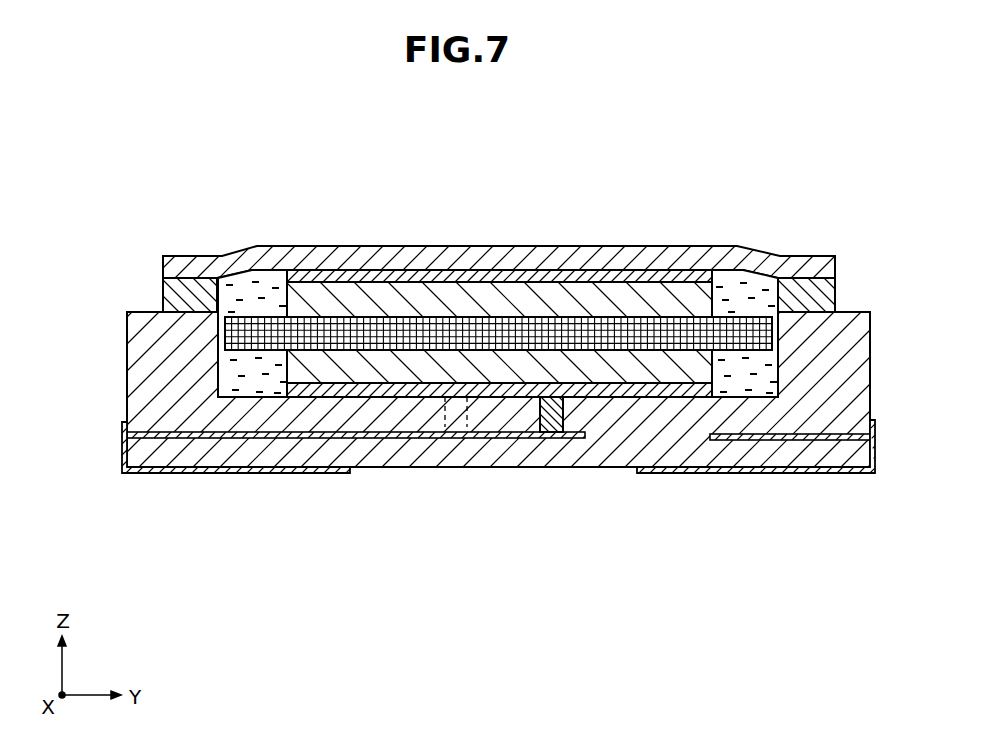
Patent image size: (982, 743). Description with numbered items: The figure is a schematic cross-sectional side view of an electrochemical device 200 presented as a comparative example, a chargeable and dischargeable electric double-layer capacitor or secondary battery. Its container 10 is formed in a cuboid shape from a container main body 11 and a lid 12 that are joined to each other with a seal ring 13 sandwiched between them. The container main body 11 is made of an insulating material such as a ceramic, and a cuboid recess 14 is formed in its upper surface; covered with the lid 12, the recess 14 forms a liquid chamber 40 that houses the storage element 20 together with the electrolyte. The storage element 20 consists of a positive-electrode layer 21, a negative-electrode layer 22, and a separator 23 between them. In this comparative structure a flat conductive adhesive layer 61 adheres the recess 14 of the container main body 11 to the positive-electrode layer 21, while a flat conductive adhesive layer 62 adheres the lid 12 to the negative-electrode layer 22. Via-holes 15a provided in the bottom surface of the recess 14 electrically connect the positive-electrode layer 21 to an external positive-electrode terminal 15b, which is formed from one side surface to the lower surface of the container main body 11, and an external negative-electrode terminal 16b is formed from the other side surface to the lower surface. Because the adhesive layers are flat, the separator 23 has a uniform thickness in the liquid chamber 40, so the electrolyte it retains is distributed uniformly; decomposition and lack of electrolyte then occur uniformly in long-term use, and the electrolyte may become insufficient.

The electrochemical device 200 is at (448, 325).
The container 10 is at (445, 356).
The container main body 11 is at (470, 389).
The lid 12 is at (163, 269).
The seal ring 13 is at (163, 293).
The recess 14 is at (276, 391).
The via-holes 15a is at (534, 427).
The external positive-electrode terminal 15b is at (167, 473).
The external negative-electrode terminal 16b is at (850, 473).
The storage element 20 is at (498, 257).
The positive-electrode layer 21 is at (668, 373).
The negative-electrode layer 22 is at (592, 300).
The separator 23 is at (638, 347).
The liquid chamber 40 is at (747, 297).
The conductive adhesive layer 61 is at (420, 396).
The conductive adhesive layer 62 is at (453, 275).